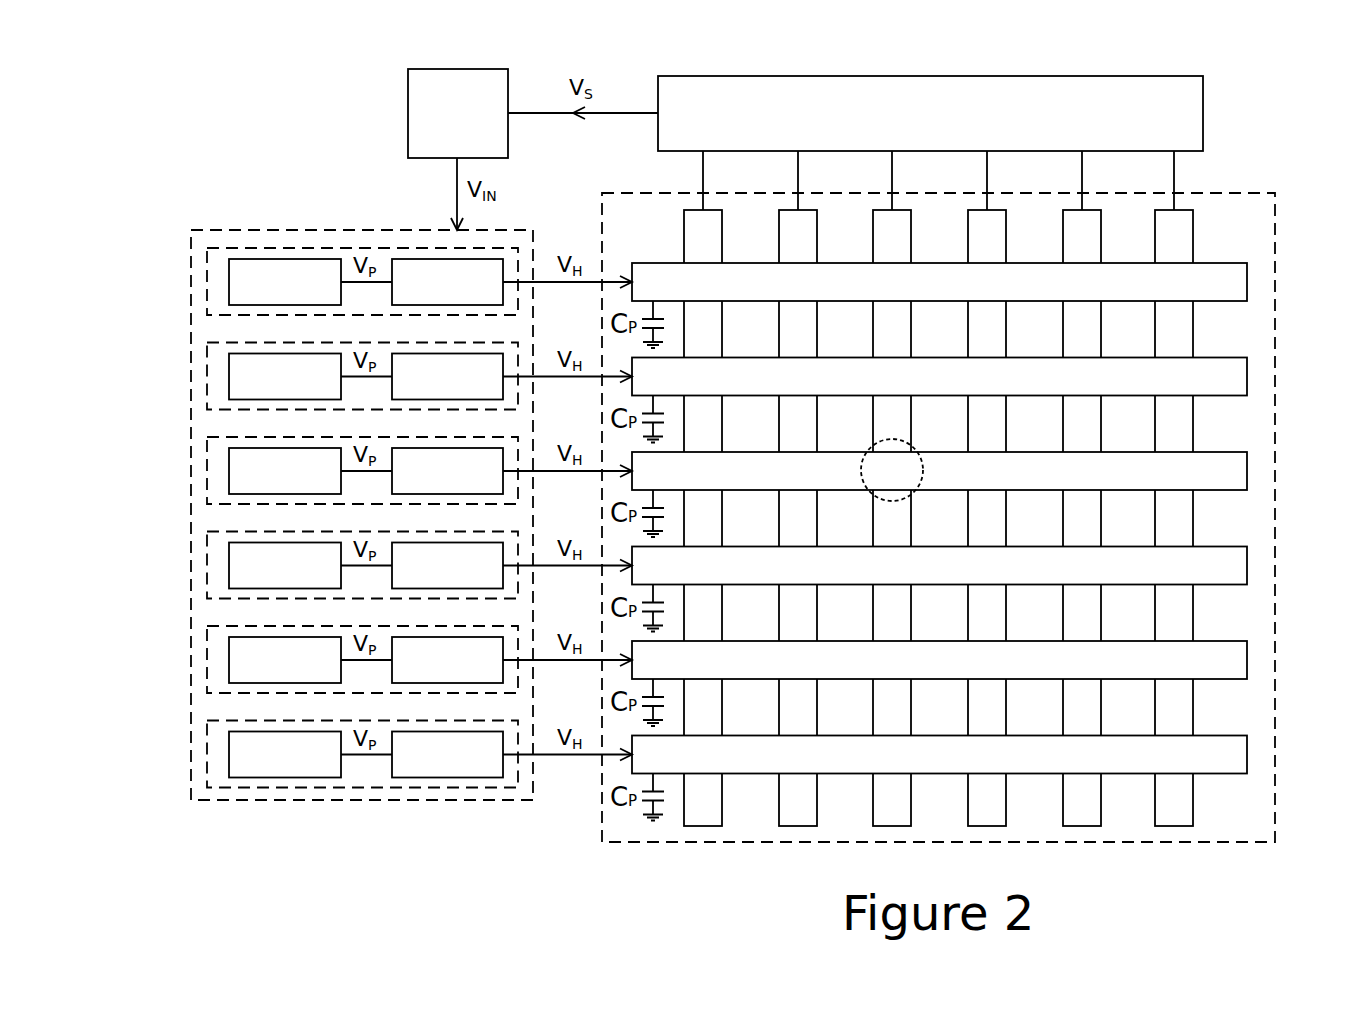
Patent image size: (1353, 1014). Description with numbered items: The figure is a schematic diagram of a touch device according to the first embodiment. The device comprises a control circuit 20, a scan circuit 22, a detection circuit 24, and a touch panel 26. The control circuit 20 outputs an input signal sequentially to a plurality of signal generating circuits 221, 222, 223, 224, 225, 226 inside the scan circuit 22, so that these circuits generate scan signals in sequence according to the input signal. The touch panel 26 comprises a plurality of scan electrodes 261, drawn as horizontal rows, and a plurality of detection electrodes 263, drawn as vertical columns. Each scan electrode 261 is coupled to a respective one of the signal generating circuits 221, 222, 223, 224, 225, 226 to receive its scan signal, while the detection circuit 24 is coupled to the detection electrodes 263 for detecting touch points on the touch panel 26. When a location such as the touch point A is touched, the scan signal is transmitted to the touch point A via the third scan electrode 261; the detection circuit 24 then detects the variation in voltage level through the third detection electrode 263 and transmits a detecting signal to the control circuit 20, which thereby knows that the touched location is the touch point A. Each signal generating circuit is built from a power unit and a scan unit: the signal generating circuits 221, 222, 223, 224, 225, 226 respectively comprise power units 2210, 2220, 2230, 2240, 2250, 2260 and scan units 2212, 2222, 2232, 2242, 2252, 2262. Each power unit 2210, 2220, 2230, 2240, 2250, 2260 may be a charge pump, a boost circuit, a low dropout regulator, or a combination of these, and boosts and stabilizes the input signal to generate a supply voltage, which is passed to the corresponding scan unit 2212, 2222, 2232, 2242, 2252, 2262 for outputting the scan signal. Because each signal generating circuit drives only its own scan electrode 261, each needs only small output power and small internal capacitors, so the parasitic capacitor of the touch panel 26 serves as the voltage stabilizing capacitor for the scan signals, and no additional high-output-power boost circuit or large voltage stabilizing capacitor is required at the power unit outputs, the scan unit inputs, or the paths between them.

The control circuit 20 is at (485, 68).
The scan circuit 22 is at (523, 230).
The detection circuit 24 is at (1203, 115).
The touch panel 26 is at (1233, 193).
The scan electrodes 261 is at (1247, 285).
The detection electrodes 263 is at (1128, 235).
The signal generating circuit 221 is at (207, 286).
The signal generating circuit 222 is at (207, 380).
The signal generating circuit 223 is at (207, 475).
The signal generating circuit 224 is at (207, 570).
The signal generating circuit 225 is at (207, 664).
The signal generating circuit 226 is at (207, 758).
The power unit 2210 is at (250, 260).
The scan unit 2212 is at (457, 259).
The power unit 2220 is at (250, 354).
The scan unit 2222 is at (457, 354).
The power unit 2230 is at (250, 449).
The scan unit 2232 is at (457, 448).
The power unit 2240 is at (250, 544).
The scan unit 2242 is at (457, 542).
The power unit 2250 is at (250, 638).
The scan unit 2252 is at (457, 637).
The power unit 2260 is at (250, 732).
The scan unit 2262 is at (457, 732).
The touch point A is at (892, 438).